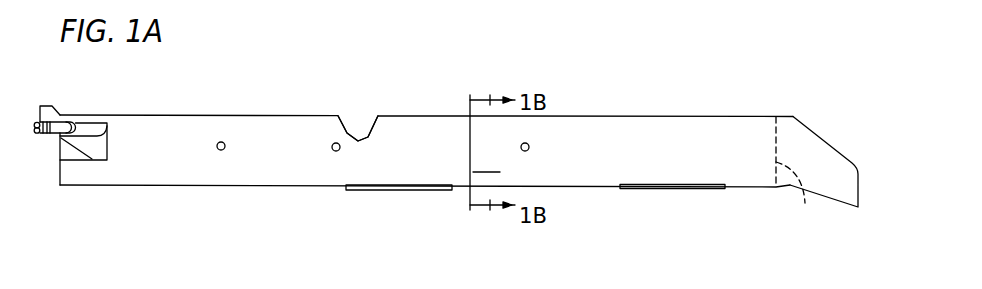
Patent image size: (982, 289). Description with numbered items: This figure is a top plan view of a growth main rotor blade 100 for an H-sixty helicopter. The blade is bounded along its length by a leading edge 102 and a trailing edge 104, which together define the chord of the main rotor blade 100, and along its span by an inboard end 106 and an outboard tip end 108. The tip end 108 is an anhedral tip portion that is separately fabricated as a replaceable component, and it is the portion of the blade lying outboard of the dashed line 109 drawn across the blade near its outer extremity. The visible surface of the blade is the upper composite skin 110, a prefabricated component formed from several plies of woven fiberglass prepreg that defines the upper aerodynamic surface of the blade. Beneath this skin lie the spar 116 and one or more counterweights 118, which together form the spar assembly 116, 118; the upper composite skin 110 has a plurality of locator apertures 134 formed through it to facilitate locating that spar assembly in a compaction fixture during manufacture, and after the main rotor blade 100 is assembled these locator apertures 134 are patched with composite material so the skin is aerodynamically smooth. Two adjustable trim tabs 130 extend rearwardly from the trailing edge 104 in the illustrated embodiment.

The main rotor blade 100 is at (449, 148).
The leading edge 102 is at (652, 113).
The trailing edge 104 is at (580, 190).
The inboard end 106 is at (62, 110).
The outboard (tip) end 108 is at (775, 105).
The dashed line 109 is at (800, 197).
The upper composite skin 110 is at (486, 161).
The spar 116 is at (373, 103).
The counterweights 118 is at (358, 127).
The adjustable trim tabs 130 is at (353, 192).
The locator apertures 134 is at (220, 142).